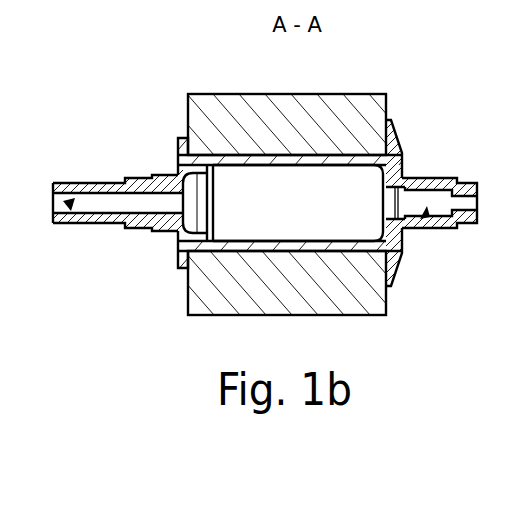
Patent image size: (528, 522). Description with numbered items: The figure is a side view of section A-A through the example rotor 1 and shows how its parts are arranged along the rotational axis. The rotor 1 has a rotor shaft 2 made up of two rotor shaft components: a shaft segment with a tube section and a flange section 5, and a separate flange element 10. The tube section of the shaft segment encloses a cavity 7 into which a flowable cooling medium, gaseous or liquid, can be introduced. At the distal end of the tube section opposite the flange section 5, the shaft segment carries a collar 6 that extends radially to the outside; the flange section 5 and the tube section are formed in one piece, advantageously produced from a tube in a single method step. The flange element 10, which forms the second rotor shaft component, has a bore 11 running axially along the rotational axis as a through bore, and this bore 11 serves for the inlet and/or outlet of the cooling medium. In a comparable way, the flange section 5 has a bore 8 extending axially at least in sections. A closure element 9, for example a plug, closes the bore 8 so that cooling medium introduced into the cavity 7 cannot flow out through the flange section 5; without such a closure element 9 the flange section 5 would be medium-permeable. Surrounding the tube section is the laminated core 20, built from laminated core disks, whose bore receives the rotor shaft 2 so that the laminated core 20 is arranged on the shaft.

The rotor 1 is at (175, 61).
The rotor shaft 2 is at (148, 126).
The laminated core 20 is at (284, 94).
The collar 6 is at (177, 137).
The flange element 10 is at (85, 178).
The bore 11 is at (68, 224).
The cavity 7 is at (298, 220).
The closure element 9 is at (406, 180).
The flange section 5 is at (456, 180).
The bore 8 is at (407, 228).